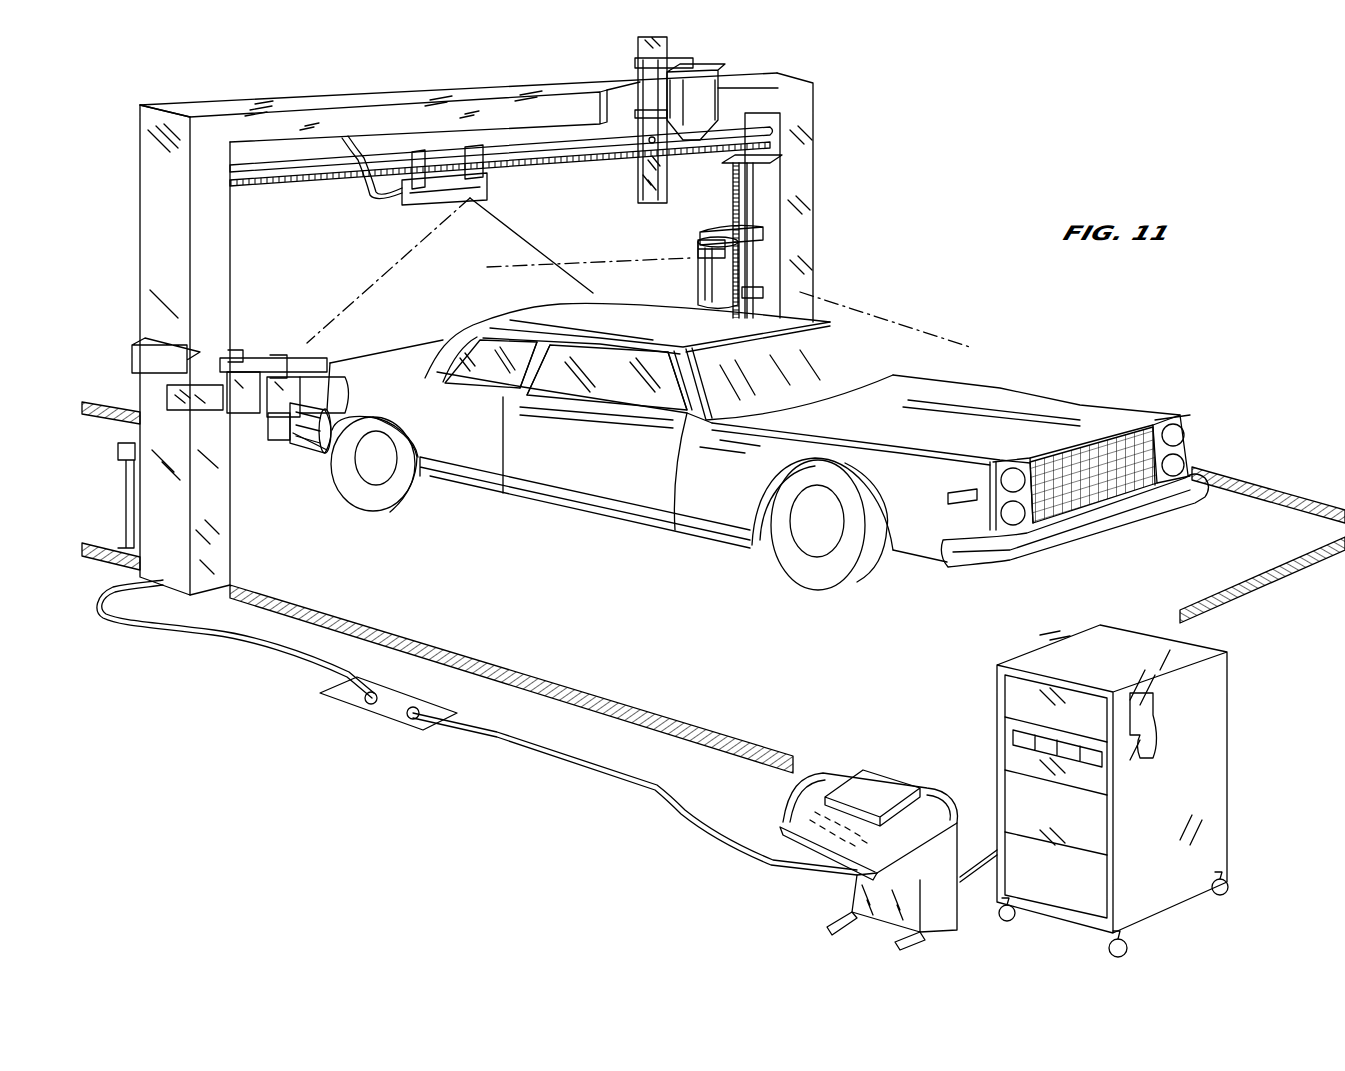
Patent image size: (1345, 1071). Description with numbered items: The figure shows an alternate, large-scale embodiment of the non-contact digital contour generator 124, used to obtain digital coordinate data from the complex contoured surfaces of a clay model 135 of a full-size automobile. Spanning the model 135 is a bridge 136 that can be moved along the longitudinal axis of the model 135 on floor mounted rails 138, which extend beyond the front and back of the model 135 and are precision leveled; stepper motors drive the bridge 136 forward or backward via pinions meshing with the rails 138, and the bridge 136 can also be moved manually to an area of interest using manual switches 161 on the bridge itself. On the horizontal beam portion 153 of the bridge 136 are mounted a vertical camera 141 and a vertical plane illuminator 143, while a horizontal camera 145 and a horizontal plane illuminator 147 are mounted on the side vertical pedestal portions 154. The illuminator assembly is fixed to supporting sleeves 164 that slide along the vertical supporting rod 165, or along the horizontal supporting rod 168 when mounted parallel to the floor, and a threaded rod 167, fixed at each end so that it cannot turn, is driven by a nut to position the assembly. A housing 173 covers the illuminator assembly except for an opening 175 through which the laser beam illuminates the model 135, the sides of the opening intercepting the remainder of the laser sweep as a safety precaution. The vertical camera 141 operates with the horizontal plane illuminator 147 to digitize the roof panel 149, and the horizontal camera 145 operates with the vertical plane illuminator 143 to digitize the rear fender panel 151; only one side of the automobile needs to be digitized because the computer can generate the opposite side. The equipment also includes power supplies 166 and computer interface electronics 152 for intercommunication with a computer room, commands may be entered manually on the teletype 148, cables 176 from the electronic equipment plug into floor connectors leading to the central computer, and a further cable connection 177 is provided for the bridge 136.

The non-contact digital contour generator 124 is at (459, 91).
The bridge 136 is at (459, 104).
The horizontal beam portion 153 is at (365, 125).
The vertical camera 141 is at (716, 72).
The side vertical pedestal portions 154 is at (150, 268).
The vertical supporting rod 165 is at (753, 193).
The supporting sleeves 164 is at (763, 233).
The housing 173 is at (728, 281).
The threaded rod 167 is at (733, 189).
The opening 175 is at (689, 244).
The horizontal plane illuminator 147 is at (684, 270).
The vertical plane illuminator 143 is at (418, 212).
The horizontal supporting rod 168 is at (523, 156).
The clay model 135 is at (751, 444).
The roof panel 149 is at (620, 322).
The rear fender panel 151 is at (462, 452).
The horizontal camera 145 is at (258, 432).
The manual switches 161 is at (120, 456).
The floor mounted rails 138 is at (404, 638).
The cable connection 177 is at (237, 647).
The cables 176 is at (497, 735).
The teletype 148 is at (862, 795).
The computer interface electronics 152 is at (1016, 753).
The power supplies 166 is at (1084, 791).